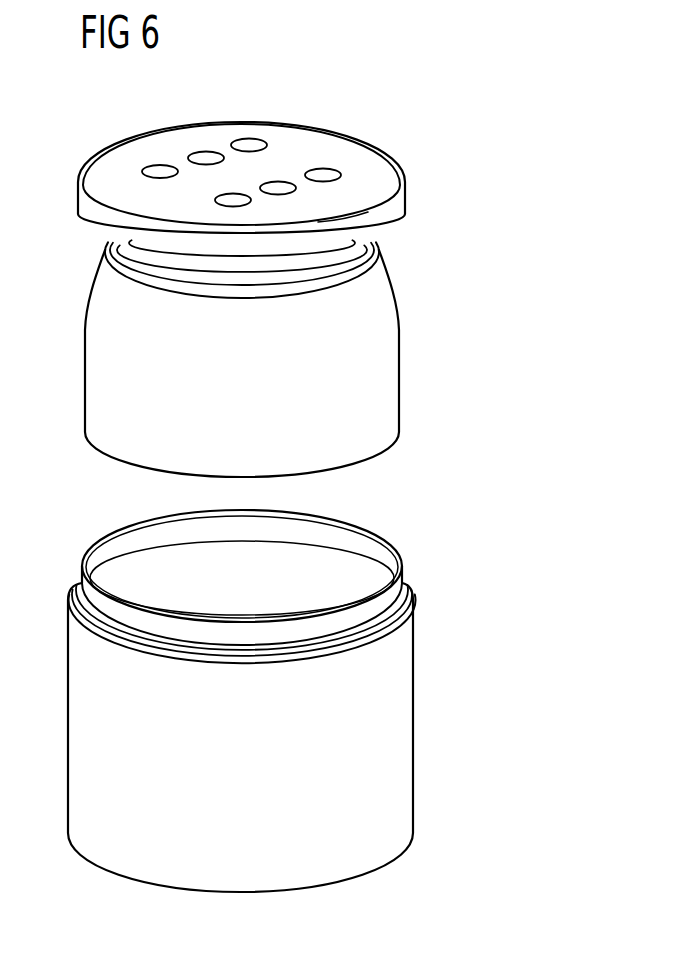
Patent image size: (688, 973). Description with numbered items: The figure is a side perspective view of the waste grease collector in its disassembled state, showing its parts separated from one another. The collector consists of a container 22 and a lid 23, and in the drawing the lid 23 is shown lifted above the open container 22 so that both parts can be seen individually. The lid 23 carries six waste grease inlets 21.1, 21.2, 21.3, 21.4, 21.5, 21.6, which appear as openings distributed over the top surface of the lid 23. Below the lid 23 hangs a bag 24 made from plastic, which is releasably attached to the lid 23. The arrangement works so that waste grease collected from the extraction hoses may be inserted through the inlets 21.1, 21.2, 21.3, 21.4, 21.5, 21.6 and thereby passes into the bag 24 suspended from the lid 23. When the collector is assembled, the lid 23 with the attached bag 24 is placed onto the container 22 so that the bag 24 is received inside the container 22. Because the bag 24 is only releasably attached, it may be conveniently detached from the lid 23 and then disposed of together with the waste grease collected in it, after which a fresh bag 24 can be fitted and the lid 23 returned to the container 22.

The waste grease inlet 21.1 is at (160, 171).
The waste grease inlet 21.2 is at (206, 158).
The waste grease inlet 21.3 is at (249, 143).
The waste grease inlet 21.4 is at (233, 200).
The waste grease inlet 21.5 is at (278, 188).
The waste grease inlet 21.6 is at (323, 175).
The lid 23 is at (372, 162).
The bag 24 is at (387, 393).
The container 22 is at (402, 778).